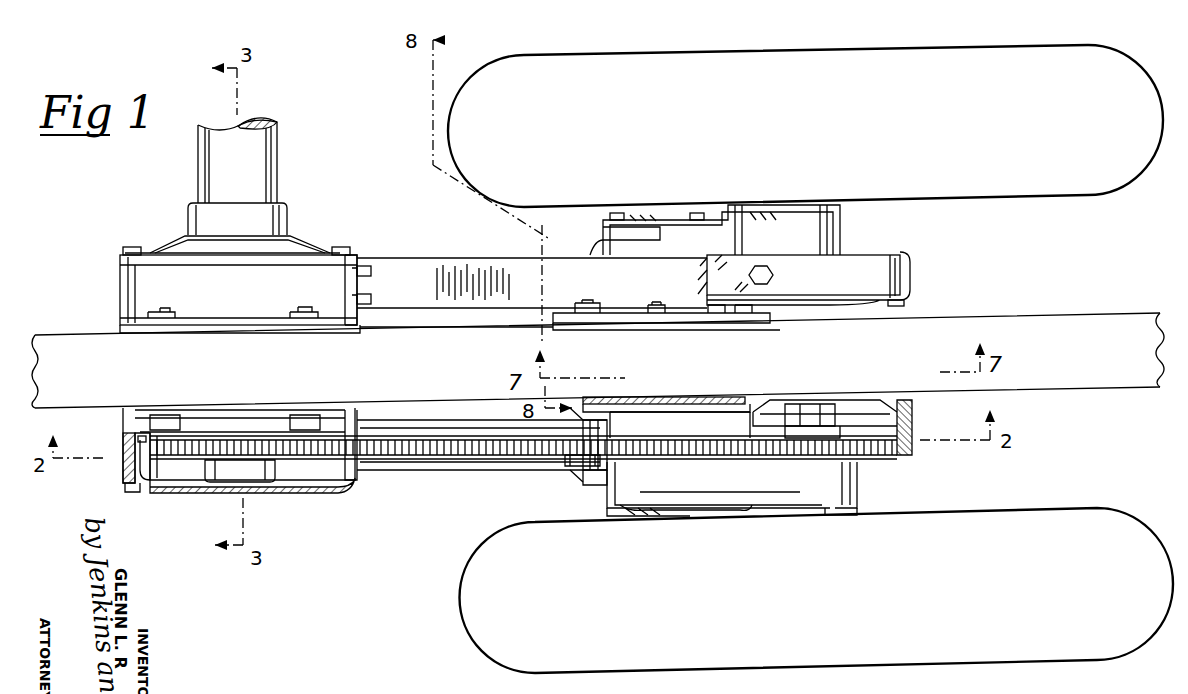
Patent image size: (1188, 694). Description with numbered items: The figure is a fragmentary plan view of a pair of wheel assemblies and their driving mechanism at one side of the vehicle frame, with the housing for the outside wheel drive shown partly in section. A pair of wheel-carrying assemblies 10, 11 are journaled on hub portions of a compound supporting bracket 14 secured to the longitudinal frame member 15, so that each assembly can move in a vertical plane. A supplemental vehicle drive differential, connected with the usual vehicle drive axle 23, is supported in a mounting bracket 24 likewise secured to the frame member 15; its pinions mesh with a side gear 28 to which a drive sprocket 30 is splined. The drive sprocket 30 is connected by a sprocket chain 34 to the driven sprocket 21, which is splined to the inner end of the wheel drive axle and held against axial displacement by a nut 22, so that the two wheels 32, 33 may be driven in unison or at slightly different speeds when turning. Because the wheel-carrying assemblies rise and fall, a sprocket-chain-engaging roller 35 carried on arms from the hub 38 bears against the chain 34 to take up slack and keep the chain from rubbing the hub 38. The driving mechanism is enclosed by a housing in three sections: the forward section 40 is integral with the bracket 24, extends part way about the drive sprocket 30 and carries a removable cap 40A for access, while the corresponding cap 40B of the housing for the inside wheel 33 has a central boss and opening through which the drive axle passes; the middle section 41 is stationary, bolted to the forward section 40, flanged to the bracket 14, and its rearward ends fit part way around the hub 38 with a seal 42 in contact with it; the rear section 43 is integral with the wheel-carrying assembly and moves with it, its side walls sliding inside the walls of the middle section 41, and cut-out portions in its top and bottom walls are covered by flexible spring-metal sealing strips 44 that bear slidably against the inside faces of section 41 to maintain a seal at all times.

The wheel-carrying assembly 10 is at (842, 489).
The wheel-carrying assembly 11 is at (808, 232).
The compound supporting bracket 14 is at (700, 323).
The longitudinal frame member 15 is at (1080, 321).
The driven sprocket 21 is at (870, 420).
The nut 22 is at (792, 410).
The vehicle drive axle 23 is at (252, 165).
The mounting bracket 24 is at (172, 410).
The side gear 28 is at (240, 468).
The drive sprocket 30 is at (190, 462).
The wheel 32 is at (1026, 520).
The inside wheel 33 is at (896, 55).
The sprocket chain 34 is at (433, 452).
The upper sprocket-chain-engaging roller 35 is at (566, 465).
The hub 38 is at (694, 430).
The forward section of housing 40 is at (353, 272).
The removable cap 40A is at (287, 494).
The cap 40B is at (168, 232).
The middle section of housing 41 is at (433, 268).
The seal 42 is at (600, 480).
The rear section of housing 43 is at (906, 280).
The sealing strip 44 is at (730, 266).